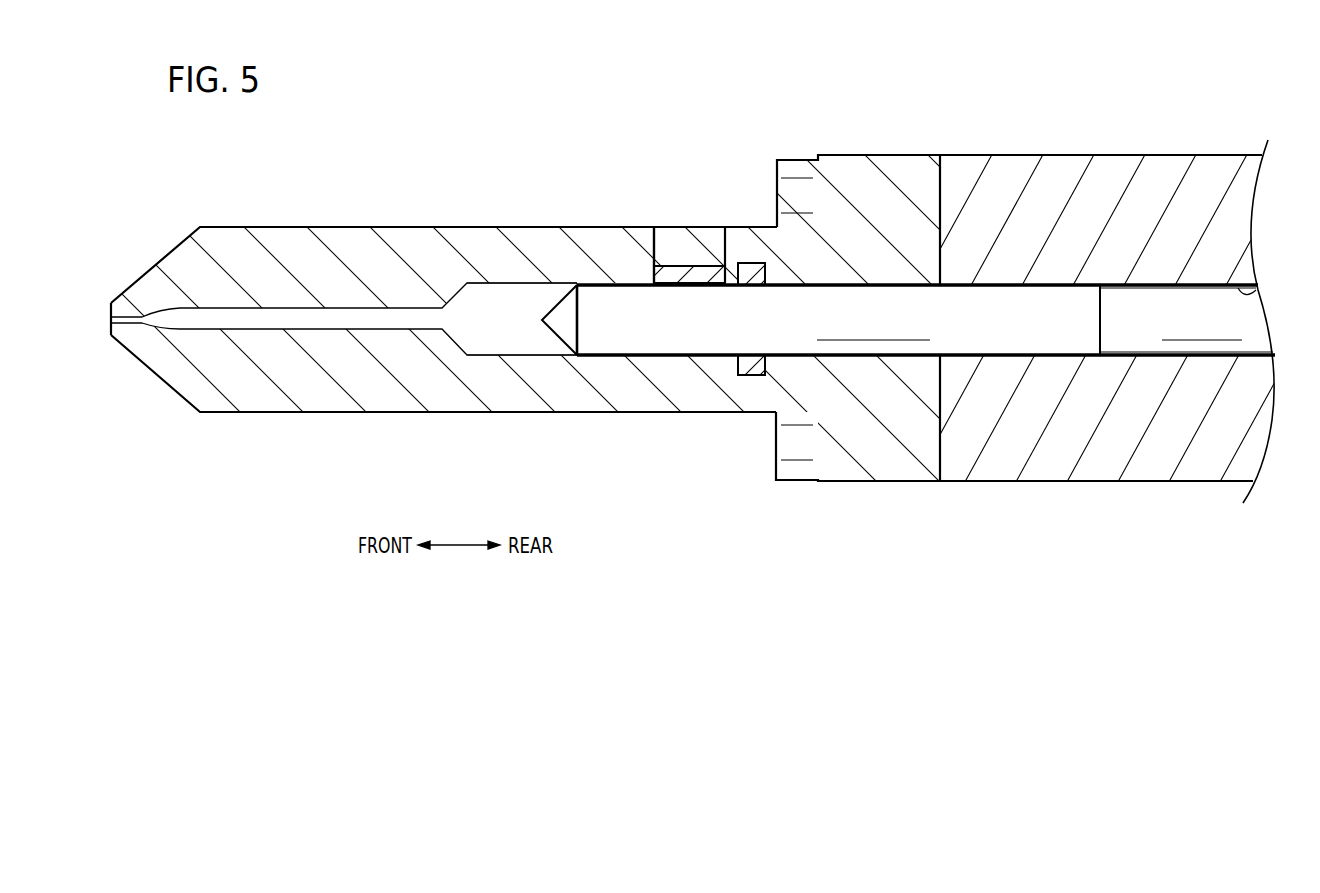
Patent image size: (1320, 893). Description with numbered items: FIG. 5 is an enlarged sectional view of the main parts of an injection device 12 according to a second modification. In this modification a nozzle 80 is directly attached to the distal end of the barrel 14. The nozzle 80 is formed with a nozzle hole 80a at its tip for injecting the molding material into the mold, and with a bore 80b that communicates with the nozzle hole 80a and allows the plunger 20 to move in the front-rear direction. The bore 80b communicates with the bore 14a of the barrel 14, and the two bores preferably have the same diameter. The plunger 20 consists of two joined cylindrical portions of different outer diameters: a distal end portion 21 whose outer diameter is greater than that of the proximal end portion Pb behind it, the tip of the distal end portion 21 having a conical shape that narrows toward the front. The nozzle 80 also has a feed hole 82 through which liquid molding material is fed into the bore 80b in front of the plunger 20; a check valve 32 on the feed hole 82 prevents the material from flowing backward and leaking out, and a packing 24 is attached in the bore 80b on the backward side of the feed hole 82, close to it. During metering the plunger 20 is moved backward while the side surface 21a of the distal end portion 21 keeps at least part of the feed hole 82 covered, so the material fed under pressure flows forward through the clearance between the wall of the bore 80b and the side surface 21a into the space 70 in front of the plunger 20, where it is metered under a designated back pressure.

The injection device 12 is at (712, 128).
The barrel 14 is at (1013, 157).
The bore of the barrel 14a is at (1240, 287).
The plunger 20 is at (1163, 104).
The distal end portion 21 is at (1040, 318).
The side surface of the distal end portion 21a is at (625, 357).
The packing 24 is at (747, 267).
The check valve 32 is at (700, 275).
The space 70 is at (495, 333).
The nozzle 80 is at (441, 227).
The nozzle hole 80a is at (142, 318).
The bore of the nozzle 80b is at (513, 297).
The feed hole 82 is at (654, 243).
The proximal end portion Pb is at (1143, 313).